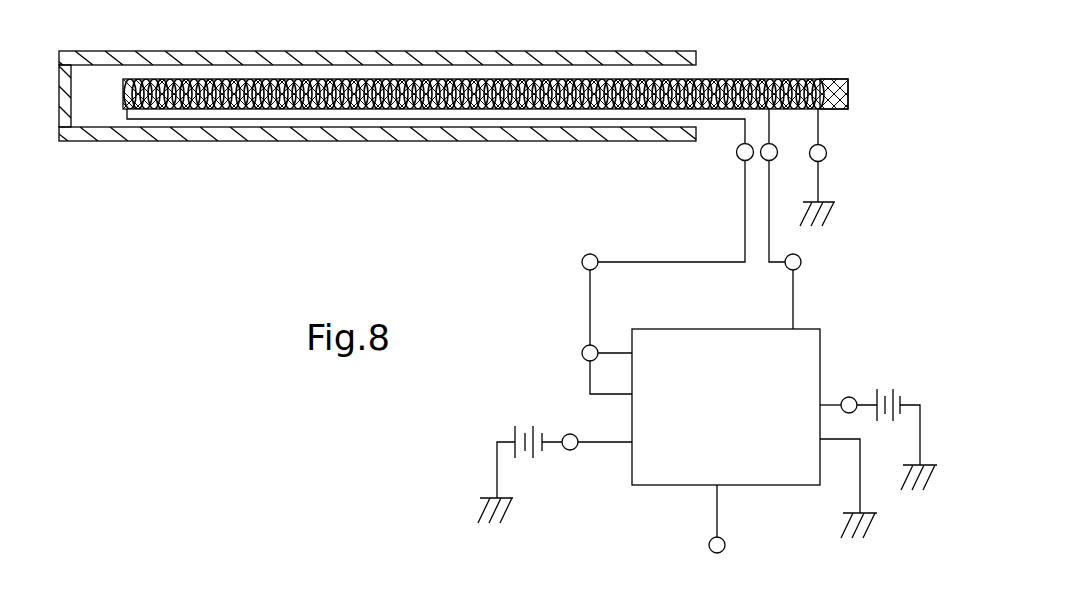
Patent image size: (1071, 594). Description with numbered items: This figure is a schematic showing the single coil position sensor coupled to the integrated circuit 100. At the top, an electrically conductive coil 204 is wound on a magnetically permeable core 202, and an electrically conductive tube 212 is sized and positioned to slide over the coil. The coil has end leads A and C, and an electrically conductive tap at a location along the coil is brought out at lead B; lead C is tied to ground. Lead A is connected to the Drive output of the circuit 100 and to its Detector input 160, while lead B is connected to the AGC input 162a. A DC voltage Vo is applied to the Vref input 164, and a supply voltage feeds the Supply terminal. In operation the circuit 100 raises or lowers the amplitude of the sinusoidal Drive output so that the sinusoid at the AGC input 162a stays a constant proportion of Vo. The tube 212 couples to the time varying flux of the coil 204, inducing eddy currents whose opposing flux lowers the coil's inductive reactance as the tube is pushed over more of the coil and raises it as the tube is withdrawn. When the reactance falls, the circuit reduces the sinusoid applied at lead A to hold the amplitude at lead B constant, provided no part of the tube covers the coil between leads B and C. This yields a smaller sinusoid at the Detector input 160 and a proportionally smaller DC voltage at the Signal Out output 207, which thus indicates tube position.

The tube 212 is at (177, 141).
The coil 204 is at (446, 100).
The core 202 is at (830, 80).
The Detector input 160 is at (612, 352).
The AGC input 162a is at (793, 309).
The integrated circuit 100 is at (657, 478).
The Vref input 164 is at (543, 452).
The Signal Out output 207 is at (725, 549).
The lead A is at (737, 152).
The lead B is at (775, 158).
The lead C is at (826, 152).